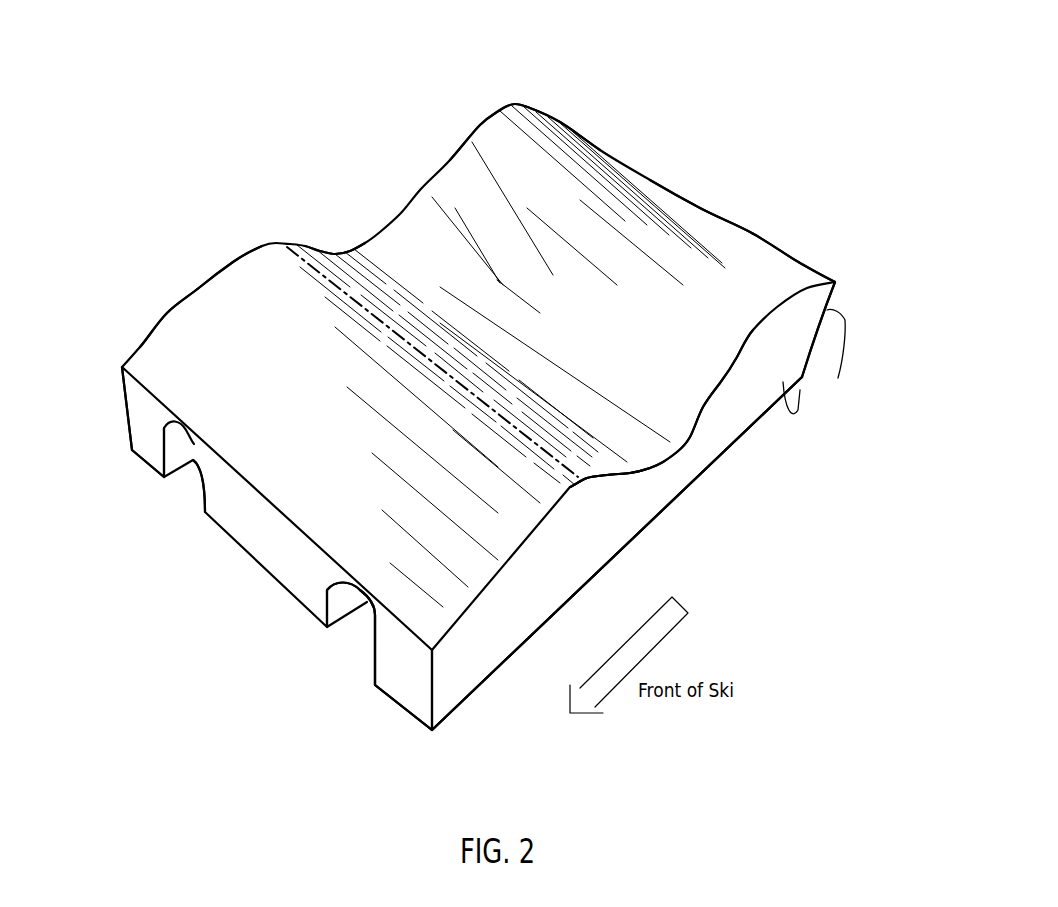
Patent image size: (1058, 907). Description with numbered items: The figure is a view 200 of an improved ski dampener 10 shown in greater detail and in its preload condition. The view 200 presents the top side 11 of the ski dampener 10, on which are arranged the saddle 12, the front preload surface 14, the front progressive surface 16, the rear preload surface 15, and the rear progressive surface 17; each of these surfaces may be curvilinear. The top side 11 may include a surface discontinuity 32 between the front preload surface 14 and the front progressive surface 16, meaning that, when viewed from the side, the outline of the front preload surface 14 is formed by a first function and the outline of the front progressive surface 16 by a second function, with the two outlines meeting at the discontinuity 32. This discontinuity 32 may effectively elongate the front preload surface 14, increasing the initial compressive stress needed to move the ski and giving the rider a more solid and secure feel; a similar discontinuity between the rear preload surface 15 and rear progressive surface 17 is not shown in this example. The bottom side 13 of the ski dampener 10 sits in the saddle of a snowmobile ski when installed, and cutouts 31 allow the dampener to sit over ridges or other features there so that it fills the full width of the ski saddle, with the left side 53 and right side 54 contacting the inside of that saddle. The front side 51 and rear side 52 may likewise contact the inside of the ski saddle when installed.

The view 200 is at (628, 58).
The ski dampener 10 is at (482, 640).
The top side 11 is at (705, 382).
The saddle 12 is at (373, 262).
The bottom side 13 is at (788, 417).
The front preload surface 14 is at (325, 258).
The rear preload surface 15 is at (455, 194).
The front progressive surface 16 is at (222, 310).
The rear progressive surface 17 is at (716, 232).
The cutouts 31 is at (205, 512).
The surface discontinuity 32 is at (564, 462).
The front side 51 is at (410, 677).
The rear side 52 is at (838, 378).
The left side 53 is at (452, 688).
The right side 54 is at (123, 408).